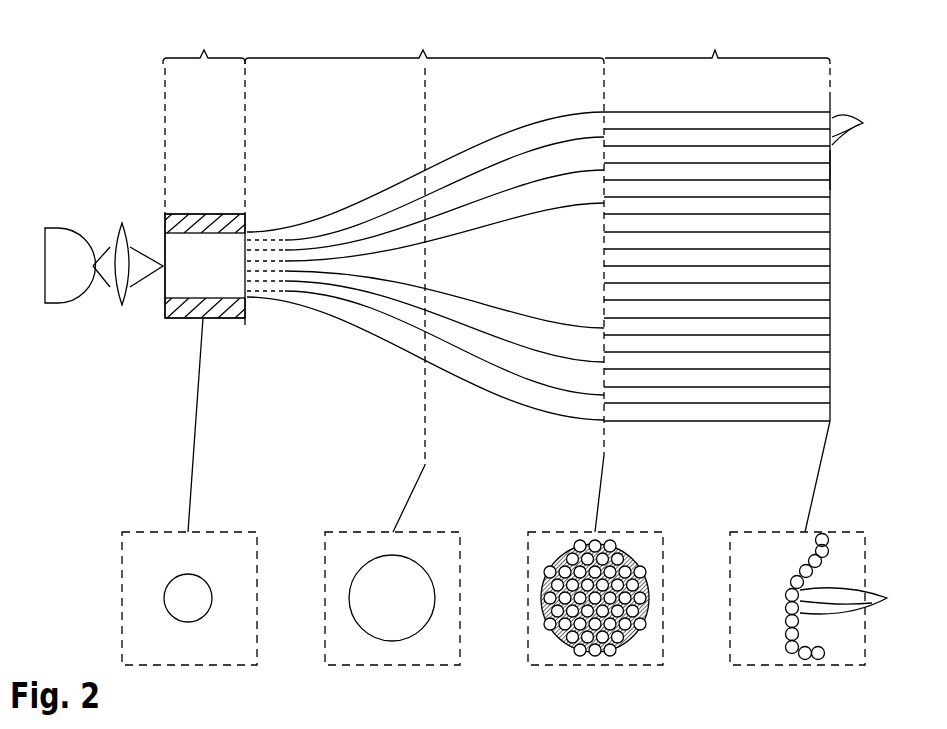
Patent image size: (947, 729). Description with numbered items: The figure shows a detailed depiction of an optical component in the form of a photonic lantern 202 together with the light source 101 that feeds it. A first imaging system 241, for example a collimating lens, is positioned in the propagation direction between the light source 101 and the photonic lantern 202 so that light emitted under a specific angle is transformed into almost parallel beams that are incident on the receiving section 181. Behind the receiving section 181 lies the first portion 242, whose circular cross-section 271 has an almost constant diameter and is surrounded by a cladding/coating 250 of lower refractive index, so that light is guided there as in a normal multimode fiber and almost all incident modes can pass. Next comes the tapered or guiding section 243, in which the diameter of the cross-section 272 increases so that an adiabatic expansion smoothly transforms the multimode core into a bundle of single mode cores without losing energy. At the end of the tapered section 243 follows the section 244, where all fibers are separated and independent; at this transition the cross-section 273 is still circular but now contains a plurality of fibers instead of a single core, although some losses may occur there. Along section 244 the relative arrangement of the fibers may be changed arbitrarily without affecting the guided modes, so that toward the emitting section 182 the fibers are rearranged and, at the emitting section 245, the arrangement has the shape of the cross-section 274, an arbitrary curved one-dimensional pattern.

The light source 101 is at (61, 228).
The first imaging system 241 is at (130, 226).
The cladding/coating 250 is at (213, 212).
The receiving section 181 is at (160, 290).
The emitting section 182 is at (832, 172).
The photonic lantern 202 is at (474, 411).
The first portion 242 is at (204, 41).
The tapered section 243 is at (424, 41).
The fiber section 244 is at (717, 220).
The emitting section 245 is at (838, 79).
The cross-section of the receiving section and first portion 271 is at (151, 532).
The cross-section in transition section 272 is at (354, 532).
The cross-section at the transition between tapered section and fiber section 273 is at (558, 532).
The cross-section at the emitting section 274 is at (760, 532).